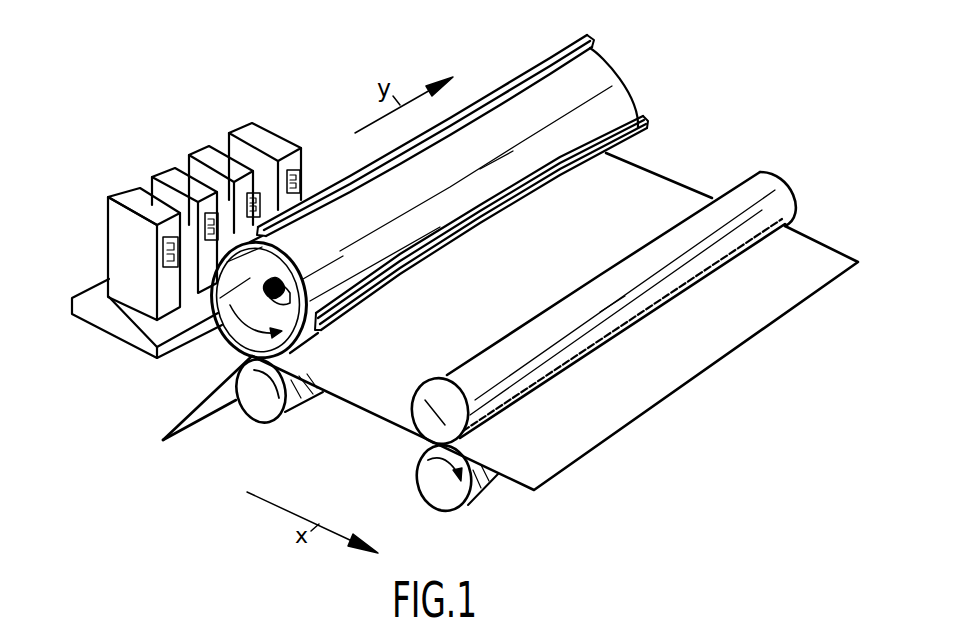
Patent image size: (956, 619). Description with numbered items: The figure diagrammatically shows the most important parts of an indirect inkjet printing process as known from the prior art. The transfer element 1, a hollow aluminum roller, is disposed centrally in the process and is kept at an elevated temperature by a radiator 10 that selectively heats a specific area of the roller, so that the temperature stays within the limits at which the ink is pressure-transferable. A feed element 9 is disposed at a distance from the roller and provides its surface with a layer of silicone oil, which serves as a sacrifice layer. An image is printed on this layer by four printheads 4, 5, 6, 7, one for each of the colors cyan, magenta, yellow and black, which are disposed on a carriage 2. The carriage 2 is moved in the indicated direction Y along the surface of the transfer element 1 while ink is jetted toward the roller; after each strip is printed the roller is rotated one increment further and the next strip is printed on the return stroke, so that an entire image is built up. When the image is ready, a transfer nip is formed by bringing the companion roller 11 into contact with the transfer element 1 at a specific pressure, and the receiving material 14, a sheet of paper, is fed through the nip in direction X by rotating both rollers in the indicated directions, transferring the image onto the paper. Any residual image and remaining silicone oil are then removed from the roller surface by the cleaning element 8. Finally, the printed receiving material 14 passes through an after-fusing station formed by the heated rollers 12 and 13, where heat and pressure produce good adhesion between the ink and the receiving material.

The transfer element 1 is at (602, 78).
The carriage 2 is at (110, 335).
The printhead 4 is at (130, 195).
The printhead 5 is at (167, 173).
The printhead 6 is at (207, 153).
The printhead 7 is at (247, 132).
The cleaning element 8 is at (646, 128).
The feed element 9 is at (552, 57).
The radiator 10 is at (283, 283).
The companion roller 11 is at (262, 405).
The heated roller 12 is at (447, 484).
The heated roller 13 is at (780, 188).
The receiving material 14 is at (697, 355).